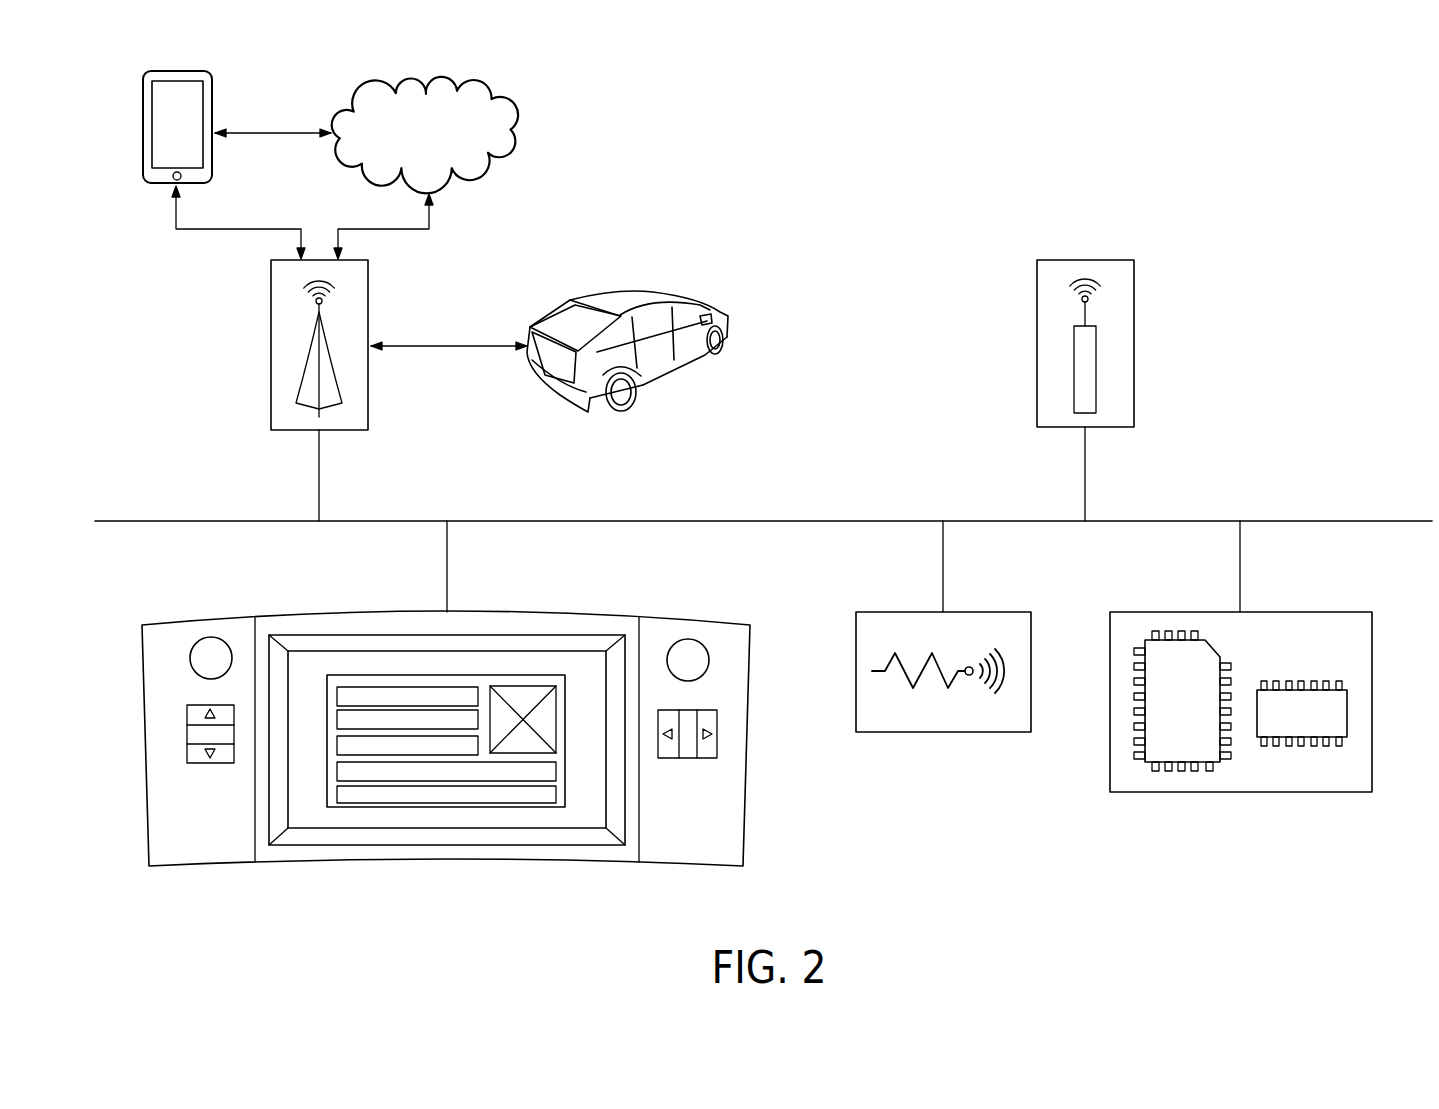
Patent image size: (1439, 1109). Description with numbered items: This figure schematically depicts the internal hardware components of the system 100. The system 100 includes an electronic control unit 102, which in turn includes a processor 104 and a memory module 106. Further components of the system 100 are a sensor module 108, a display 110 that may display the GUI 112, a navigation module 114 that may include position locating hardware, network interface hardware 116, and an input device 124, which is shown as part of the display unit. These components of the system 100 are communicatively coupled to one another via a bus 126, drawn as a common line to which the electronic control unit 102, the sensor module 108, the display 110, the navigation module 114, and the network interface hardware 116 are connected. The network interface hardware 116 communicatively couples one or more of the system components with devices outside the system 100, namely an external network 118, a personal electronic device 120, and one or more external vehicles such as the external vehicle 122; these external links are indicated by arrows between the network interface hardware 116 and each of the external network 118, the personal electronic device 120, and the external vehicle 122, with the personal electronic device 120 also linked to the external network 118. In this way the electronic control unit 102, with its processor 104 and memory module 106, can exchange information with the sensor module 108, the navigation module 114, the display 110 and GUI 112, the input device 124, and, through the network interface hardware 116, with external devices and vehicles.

The system 100 is at (748, 468).
The electronic control unit 102 is at (1333, 611).
The processor 104 is at (1145, 765).
The memory module 106 is at (1347, 716).
The sensor module 108 is at (983, 611).
The display 110 is at (625, 614).
The GUI 112 is at (492, 675).
The navigation module 114 is at (1037, 342).
The network interface hardware 116 is at (271, 346).
The external network 118 is at (517, 113).
The personal electronic device 120 is at (143, 130).
The external vehicle 122 is at (640, 288).
The input device 124 is at (211, 637).
The bus 126 is at (1182, 520).